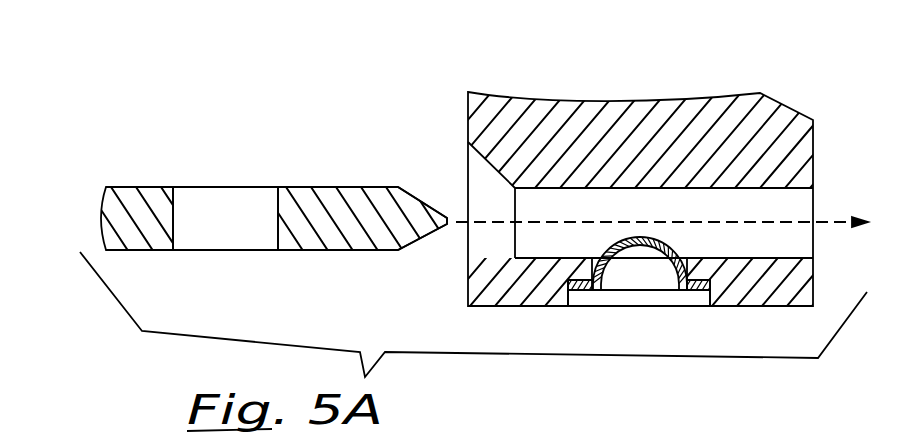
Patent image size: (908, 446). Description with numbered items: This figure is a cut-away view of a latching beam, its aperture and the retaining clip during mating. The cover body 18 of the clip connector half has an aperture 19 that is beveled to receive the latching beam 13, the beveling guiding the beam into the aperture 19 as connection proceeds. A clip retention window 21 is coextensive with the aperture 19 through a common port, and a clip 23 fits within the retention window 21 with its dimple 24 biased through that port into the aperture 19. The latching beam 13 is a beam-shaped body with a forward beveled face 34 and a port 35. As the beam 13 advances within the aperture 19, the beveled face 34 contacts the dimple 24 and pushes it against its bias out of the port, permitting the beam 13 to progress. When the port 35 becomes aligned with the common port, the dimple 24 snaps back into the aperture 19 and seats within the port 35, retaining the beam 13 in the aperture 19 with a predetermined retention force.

The latching beam 13 is at (320, 192).
The port 35 is at (232, 195).
The beveled face 34 is at (423, 204).
The cover body 18 is at (813, 145).
The aperture 19 is at (773, 207).
The clip retention window 21 is at (682, 300).
The clip 23 is at (587, 293).
The dimple 24 is at (653, 240).